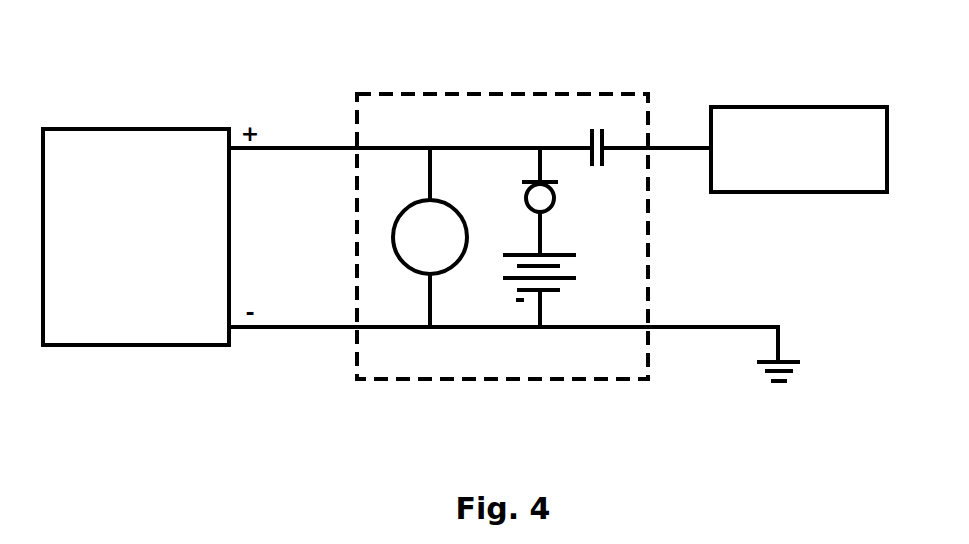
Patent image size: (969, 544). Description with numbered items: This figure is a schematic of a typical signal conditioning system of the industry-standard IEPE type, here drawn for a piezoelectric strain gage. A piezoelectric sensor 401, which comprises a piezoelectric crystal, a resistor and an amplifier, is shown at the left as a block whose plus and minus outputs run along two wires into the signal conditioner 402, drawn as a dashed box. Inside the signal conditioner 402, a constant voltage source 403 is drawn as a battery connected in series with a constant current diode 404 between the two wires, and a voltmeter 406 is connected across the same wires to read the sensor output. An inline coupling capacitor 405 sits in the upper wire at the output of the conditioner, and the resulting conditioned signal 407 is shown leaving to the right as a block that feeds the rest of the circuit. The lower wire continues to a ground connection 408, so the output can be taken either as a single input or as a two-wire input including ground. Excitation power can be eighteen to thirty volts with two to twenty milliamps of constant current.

The piezoelectric sensor 401 is at (175, 128).
The signal conditioner 402 is at (386, 92).
The constant voltage source 403 is at (566, 281).
The constant current diode 404 is at (530, 185).
The inline coupling capacitor 405 is at (602, 144).
The voltmeter 406 is at (413, 270).
The conditioned signal 407 is at (793, 106).
The ground connection 408 is at (756, 326).